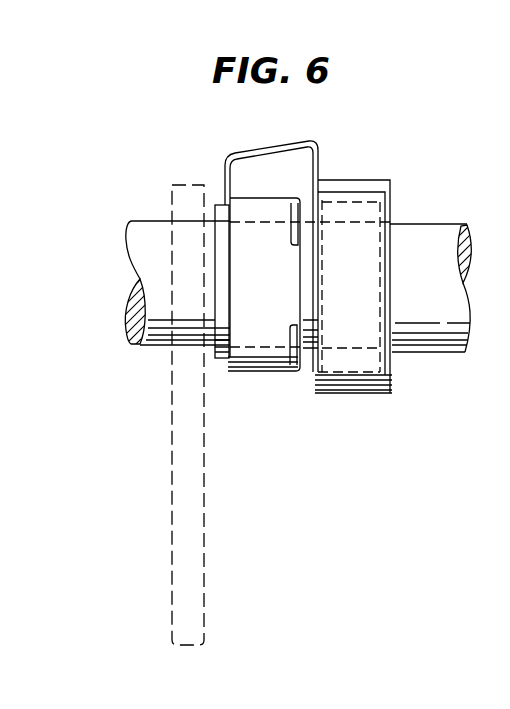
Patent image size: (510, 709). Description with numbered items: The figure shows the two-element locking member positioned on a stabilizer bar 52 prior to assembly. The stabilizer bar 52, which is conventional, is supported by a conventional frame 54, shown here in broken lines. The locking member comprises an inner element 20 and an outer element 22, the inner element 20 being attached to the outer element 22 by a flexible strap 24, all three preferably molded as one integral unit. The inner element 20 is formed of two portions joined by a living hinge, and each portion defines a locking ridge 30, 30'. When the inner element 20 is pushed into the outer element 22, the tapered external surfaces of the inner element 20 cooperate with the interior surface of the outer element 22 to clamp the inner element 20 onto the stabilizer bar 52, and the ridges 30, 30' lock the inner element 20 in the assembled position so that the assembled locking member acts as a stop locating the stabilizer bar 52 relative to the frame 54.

The inner element 20 is at (245, 371).
The outer element 22 is at (377, 178).
The flexible strap 24 is at (292, 140).
The locking ridge 30 is at (295, 201).
The locking ridge 30' is at (288, 371).
The stabilizer bar 52 is at (140, 220).
The frame 54 is at (170, 526).